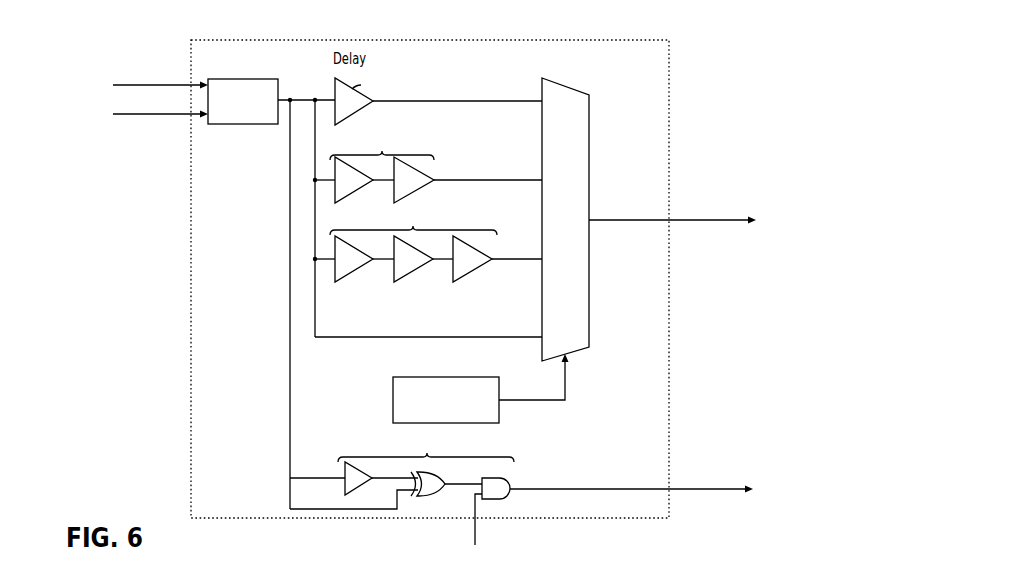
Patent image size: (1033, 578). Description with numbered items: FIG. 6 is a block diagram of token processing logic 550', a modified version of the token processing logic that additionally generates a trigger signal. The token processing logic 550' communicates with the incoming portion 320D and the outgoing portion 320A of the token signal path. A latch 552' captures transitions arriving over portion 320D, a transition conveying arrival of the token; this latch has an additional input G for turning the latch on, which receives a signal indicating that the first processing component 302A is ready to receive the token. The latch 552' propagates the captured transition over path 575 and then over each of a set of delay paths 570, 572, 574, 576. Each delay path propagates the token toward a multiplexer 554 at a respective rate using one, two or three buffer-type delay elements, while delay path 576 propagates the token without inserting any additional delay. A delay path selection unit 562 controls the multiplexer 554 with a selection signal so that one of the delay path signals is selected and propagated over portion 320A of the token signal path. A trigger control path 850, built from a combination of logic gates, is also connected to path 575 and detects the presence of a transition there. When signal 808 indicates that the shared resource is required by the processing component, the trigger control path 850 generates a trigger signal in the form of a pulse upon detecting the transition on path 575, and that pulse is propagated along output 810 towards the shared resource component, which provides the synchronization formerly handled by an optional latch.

The token processing logic 550' is at (430, 264).
The portion of token signal path 320D is at (152, 83).
The processing component #1 302A is at (156, 115).
The latch 552' is at (243, 87).
The path 575 is at (303, 99).
The delay path 570 is at (502, 101).
The delay path 572 is at (502, 180).
The delay path 574 is at (502, 258).
The delay path 576 is at (419, 337).
The multiplexer 554 is at (571, 86).
The portion of token signal path 320A is at (731, 219).
The delay path selection unit 562 is at (449, 377).
The trigger control path 850 is at (402, 471).
The signal 808 is at (475, 531).
The output 810 is at (731, 488).